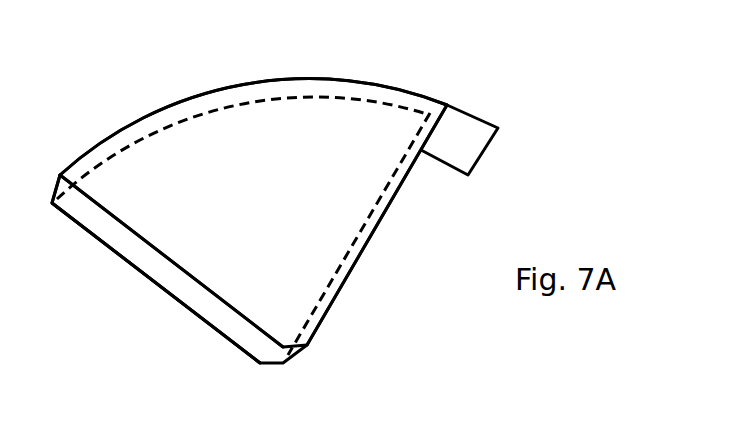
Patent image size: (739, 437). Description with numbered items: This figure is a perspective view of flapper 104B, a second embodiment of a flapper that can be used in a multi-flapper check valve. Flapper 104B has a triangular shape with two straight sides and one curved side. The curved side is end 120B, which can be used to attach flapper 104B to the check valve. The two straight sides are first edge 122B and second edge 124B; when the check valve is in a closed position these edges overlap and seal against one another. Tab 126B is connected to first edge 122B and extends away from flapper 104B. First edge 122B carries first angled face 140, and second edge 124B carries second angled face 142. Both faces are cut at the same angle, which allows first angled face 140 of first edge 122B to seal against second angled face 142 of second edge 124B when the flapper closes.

The flapper 104B is at (136, 67).
The end 120B is at (297, 78).
The first edge 122B is at (355, 267).
The second edge 124B is at (150, 248).
The tab 126B is at (463, 130).
The first angled face 140 is at (327, 317).
The second angled face 142 is at (230, 323).